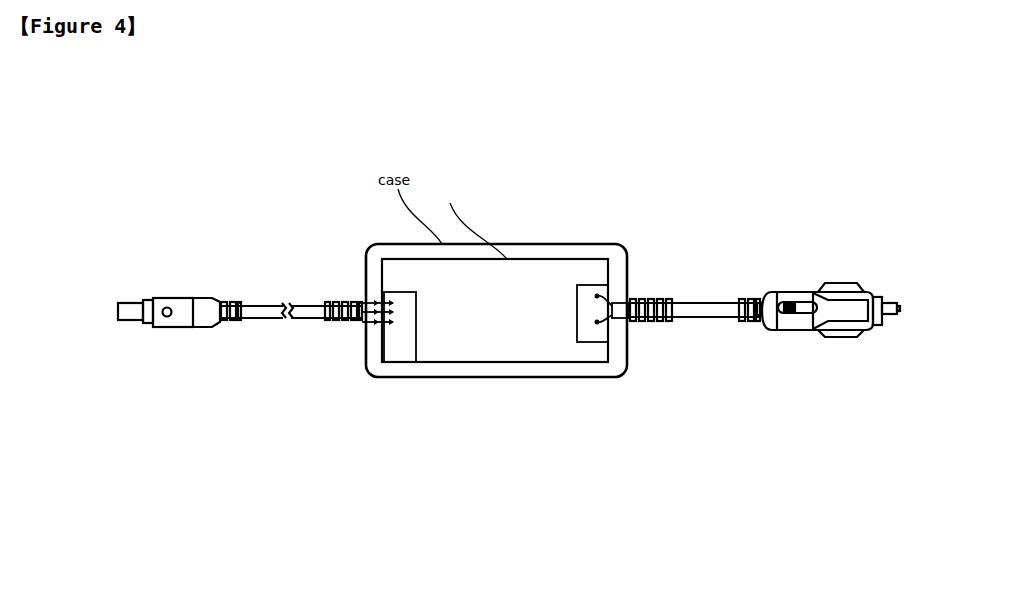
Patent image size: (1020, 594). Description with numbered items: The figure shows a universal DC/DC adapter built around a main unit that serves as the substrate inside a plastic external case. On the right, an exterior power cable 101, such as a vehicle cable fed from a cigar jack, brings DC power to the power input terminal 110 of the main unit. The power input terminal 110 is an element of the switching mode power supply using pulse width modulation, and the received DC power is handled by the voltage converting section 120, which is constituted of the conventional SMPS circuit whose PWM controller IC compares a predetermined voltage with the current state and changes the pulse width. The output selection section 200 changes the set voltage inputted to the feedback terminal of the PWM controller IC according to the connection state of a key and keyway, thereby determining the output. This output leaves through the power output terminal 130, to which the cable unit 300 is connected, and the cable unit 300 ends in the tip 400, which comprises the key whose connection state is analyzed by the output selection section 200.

The exterior power cable 101 is at (710, 301).
The power input terminal 110 is at (600, 342).
The voltage converting section 120 is at (495, 273).
The power output terminal 130 is at (383, 292).
The output selection section 200 is at (400, 327).
The cable unit 300 is at (270, 306).
The tip 400 is at (182, 298).